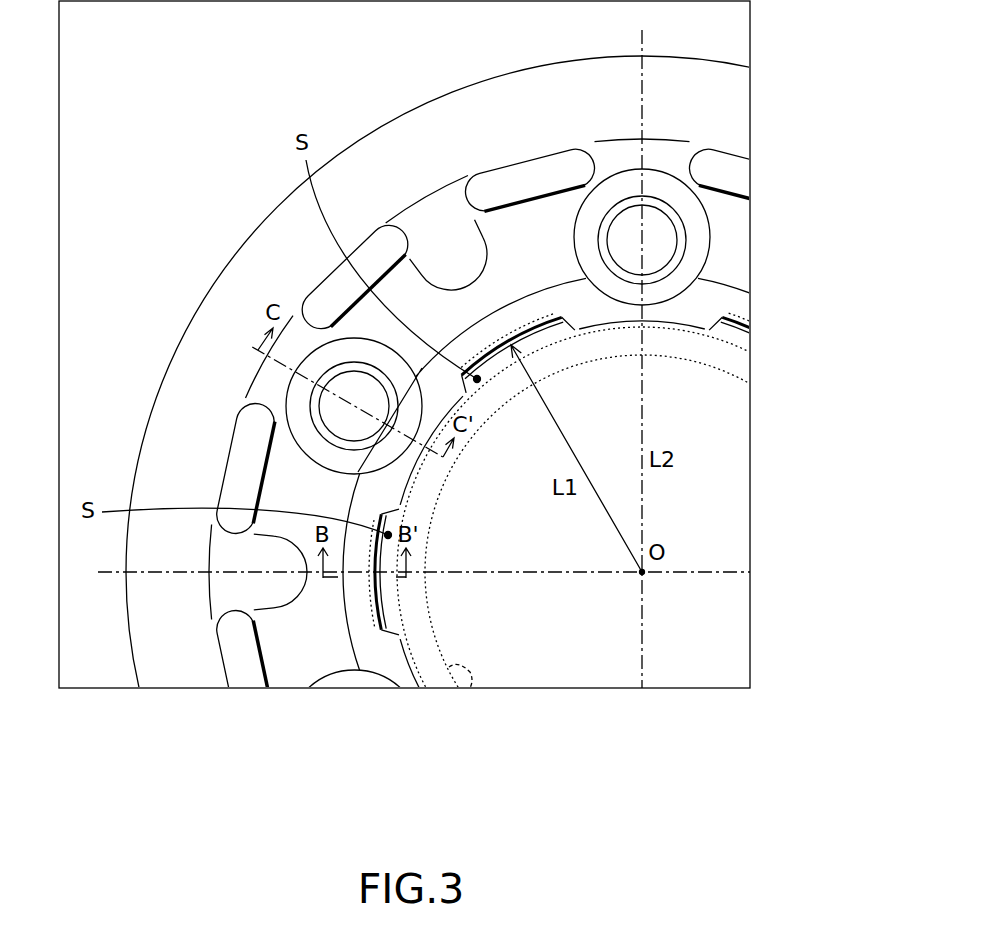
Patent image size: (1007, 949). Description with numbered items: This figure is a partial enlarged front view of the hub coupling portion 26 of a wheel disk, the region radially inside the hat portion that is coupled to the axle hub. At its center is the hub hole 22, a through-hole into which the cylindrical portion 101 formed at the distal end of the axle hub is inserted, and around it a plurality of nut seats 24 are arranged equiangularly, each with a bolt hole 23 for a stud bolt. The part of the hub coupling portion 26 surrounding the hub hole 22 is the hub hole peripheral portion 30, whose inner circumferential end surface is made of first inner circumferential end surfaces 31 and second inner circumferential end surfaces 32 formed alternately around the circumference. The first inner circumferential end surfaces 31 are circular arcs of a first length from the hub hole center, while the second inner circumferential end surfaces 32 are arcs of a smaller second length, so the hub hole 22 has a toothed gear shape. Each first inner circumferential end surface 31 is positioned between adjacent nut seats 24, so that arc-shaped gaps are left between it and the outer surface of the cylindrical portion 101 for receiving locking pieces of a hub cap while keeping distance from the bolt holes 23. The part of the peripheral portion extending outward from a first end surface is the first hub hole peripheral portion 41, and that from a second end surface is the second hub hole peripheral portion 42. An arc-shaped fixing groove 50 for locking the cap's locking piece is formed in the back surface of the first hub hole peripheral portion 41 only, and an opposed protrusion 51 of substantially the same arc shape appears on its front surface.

The hub hole 22 is at (568, 676).
The bolt hole 23 is at (335, 432).
The nut seat 24 is at (627, 187).
The hub coupling portion 26 is at (735, 238).
The hub hole peripheral portion 30 is at (738, 300).
The first inner circumferential end surface 31 is at (555, 333).
The second inner circumferential end surface 32 is at (737, 346).
The first hub hole peripheral portion 41 is at (410, 250).
The second hub hole peripheral portion 42 is at (307, 333).
The fixing groove 50 is at (540, 313).
The protrusion 51 is at (488, 333).
The cylindrical portion 101 is at (465, 690).